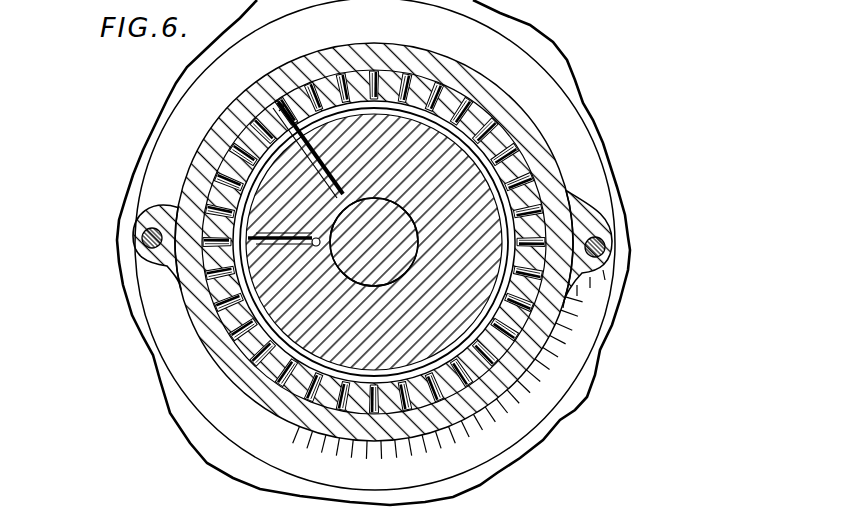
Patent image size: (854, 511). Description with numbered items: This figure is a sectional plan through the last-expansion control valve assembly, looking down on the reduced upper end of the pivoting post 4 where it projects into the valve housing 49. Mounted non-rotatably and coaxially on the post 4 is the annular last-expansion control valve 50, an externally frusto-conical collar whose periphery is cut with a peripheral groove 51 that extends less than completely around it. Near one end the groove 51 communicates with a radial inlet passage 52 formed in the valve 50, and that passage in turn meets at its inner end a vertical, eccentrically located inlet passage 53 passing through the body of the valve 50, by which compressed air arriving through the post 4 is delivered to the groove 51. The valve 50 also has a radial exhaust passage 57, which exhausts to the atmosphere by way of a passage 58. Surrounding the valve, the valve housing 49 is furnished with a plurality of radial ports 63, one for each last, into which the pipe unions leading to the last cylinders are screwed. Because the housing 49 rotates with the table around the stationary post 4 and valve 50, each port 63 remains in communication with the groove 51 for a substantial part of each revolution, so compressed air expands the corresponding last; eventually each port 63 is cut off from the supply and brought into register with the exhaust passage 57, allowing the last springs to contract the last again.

The pivoting post 4 is at (363, 242).
The valve housing 49 is at (560, 247).
The last-expansion control valve 50 is at (467, 170).
The peripheral groove 51 is at (476, 158).
The radial inlet passage 52 is at (258, 243).
The vertical eccentrically located inlet passage 53 is at (300, 250).
The radial exhaust passage 57 is at (306, 148).
The passage 58 is at (303, 165).
The radial ports 63 is at (280, 106).